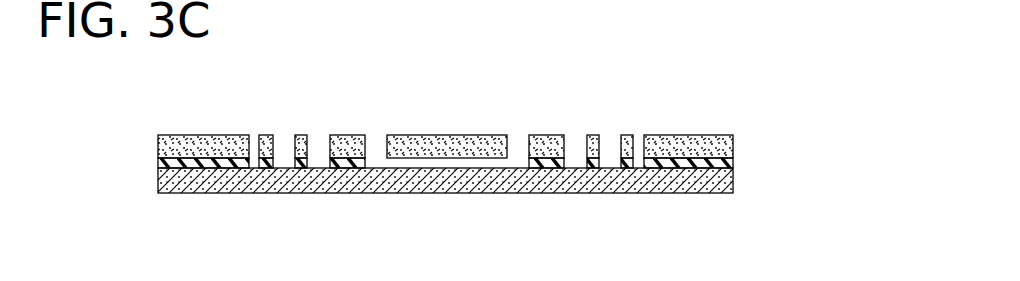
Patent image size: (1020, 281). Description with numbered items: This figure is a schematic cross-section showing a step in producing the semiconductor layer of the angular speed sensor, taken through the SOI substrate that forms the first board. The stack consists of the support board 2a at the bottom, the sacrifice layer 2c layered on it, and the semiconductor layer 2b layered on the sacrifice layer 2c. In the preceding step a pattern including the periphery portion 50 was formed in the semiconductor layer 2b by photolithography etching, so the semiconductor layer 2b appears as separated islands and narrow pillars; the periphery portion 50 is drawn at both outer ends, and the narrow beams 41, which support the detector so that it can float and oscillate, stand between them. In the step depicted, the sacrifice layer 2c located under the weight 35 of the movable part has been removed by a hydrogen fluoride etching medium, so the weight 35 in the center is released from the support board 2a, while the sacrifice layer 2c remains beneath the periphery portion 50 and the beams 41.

The support board 2a is at (727, 183).
The semiconductor layer 2b is at (484, 108).
The sacrifice layer 2c is at (727, 163).
The weight 35 is at (462, 135).
The beam 41 is at (272, 135).
The periphery portion 50 is at (200, 137).